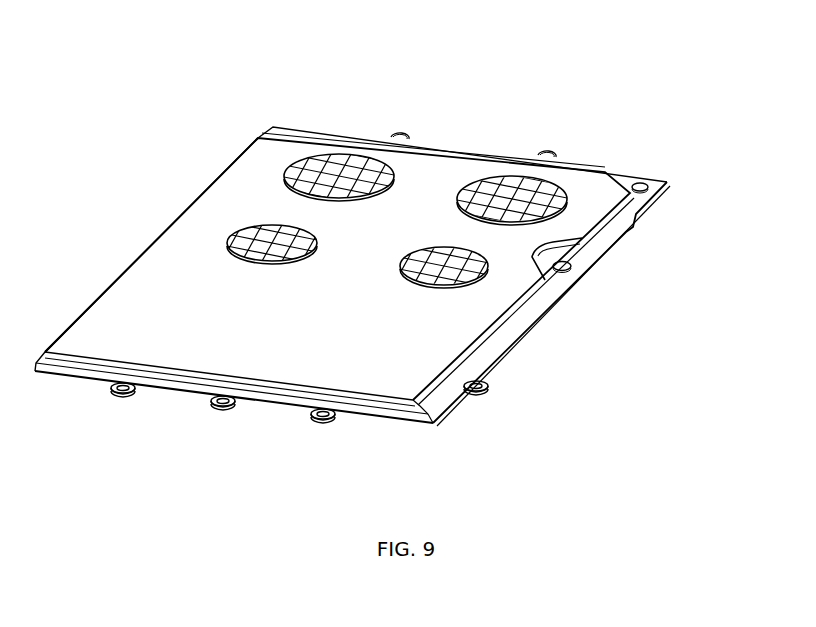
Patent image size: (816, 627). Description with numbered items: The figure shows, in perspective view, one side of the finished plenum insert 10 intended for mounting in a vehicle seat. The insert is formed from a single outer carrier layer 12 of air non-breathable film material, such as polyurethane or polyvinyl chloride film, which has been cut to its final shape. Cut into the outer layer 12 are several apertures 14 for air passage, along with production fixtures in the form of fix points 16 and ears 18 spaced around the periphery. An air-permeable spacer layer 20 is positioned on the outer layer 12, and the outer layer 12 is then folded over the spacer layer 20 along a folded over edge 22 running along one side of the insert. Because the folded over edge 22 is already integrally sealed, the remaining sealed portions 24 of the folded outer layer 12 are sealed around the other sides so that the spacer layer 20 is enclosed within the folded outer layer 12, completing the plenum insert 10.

The plenum insert 10 is at (290, 76).
The outer carrier layer 12 is at (352, 276).
The apertures 14 is at (352, 158).
The fix points 16 is at (647, 181).
The ears 18 is at (208, 405).
The spacer layer 20 is at (267, 237).
The folded over edge 22 is at (175, 218).
The sealed portions 24 is at (547, 282).